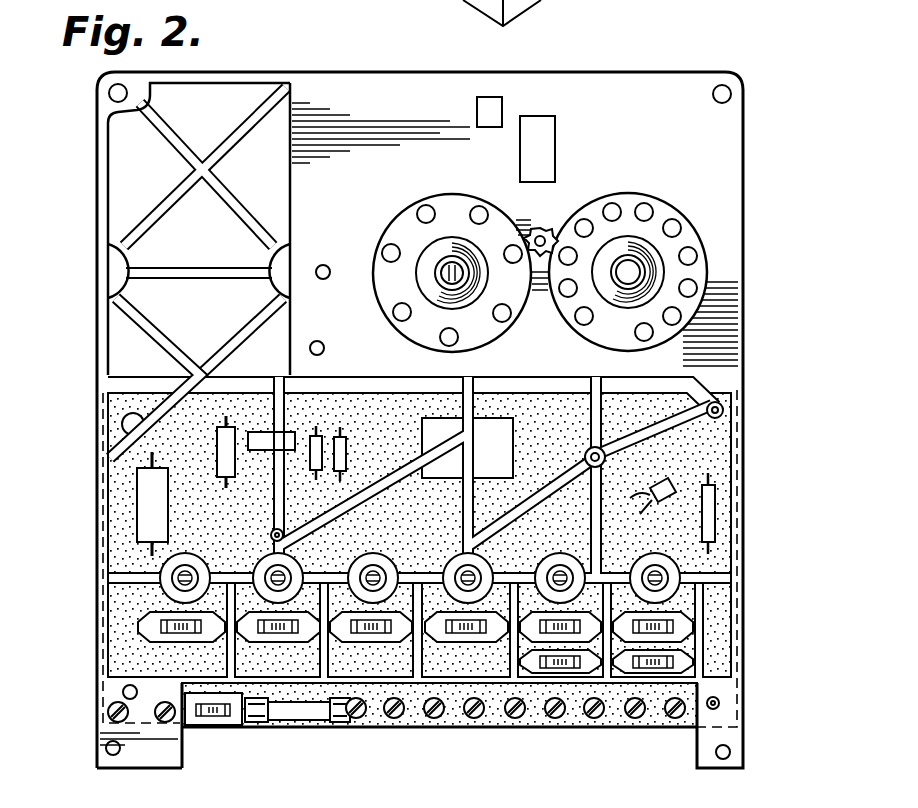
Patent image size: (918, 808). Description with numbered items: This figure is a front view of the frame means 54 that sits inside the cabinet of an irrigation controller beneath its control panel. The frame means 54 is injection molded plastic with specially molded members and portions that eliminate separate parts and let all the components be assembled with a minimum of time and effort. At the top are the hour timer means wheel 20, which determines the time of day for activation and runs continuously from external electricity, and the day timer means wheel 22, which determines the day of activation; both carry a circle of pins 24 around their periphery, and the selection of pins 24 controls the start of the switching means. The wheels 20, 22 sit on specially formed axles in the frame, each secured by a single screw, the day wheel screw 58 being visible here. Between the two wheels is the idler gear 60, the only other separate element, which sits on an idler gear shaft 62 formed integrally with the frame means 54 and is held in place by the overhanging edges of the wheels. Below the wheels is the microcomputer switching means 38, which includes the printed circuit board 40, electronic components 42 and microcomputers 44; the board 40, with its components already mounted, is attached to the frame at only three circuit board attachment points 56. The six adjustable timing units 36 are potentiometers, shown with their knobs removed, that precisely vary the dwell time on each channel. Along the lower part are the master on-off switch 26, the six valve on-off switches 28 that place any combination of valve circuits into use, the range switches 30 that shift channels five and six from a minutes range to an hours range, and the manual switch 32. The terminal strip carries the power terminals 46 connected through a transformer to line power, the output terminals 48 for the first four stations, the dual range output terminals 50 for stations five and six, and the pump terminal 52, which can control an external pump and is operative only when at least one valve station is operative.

The hour timer means wheel 20 is at (705, 258).
The day timer means wheel 22 is at (380, 240).
The pins 24 is at (478, 205).
The master on-off switch 26 is at (215, 722).
The valve on-off switches 28 is at (350, 615).
The range switches 30 is at (525, 667).
The manual switch 32 is at (588, 450).
The adjustable timing units 36 is at (275, 565).
The microcomputer switching means 38 is at (92, 522).
The printed circuit board 40 is at (708, 453).
The electronic components 42 is at (226, 425).
The microcomputers 44 is at (300, 438).
The power terminals 46 is at (165, 722).
The output terminals 48 is at (553, 718).
The dual range output terminals 50 is at (632, 718).
The pump terminal 52 is at (674, 718).
The frame means 54 is at (97, 162).
The circuit board attachment points 56 is at (724, 410).
The day wheel screw 58 is at (445, 276).
The idler gear 60 is at (546, 236).
The idler gear shaft 62 is at (522, 220).